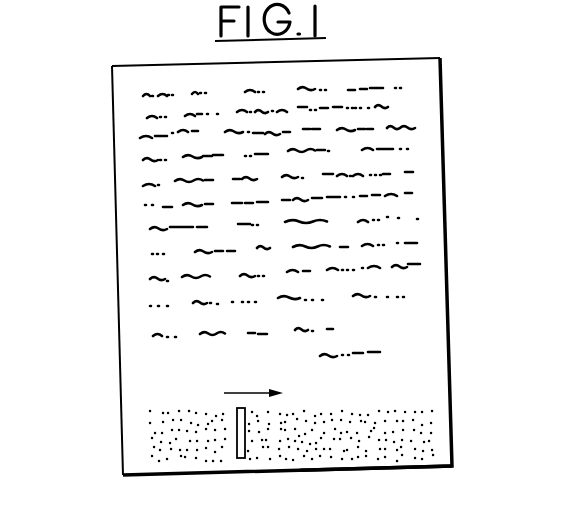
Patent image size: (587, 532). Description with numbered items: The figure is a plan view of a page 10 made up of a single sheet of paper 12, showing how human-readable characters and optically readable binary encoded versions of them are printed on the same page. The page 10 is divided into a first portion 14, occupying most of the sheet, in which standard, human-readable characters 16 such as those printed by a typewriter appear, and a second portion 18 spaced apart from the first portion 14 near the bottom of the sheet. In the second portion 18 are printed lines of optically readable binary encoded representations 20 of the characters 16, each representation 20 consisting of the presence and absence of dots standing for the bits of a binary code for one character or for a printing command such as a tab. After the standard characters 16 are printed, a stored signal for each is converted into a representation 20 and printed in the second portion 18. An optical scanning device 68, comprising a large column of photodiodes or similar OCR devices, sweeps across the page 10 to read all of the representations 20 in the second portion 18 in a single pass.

The page 10 is at (118, 394).
The sheet of paper 12 is at (380, 469).
The first portion 14 is at (463, 356).
The human-readable characters 16 is at (147, 92).
The second portion 18 is at (466, 400).
The binary encoded representations 20 is at (303, 450).
The optical scanning device 68 is at (238, 459).